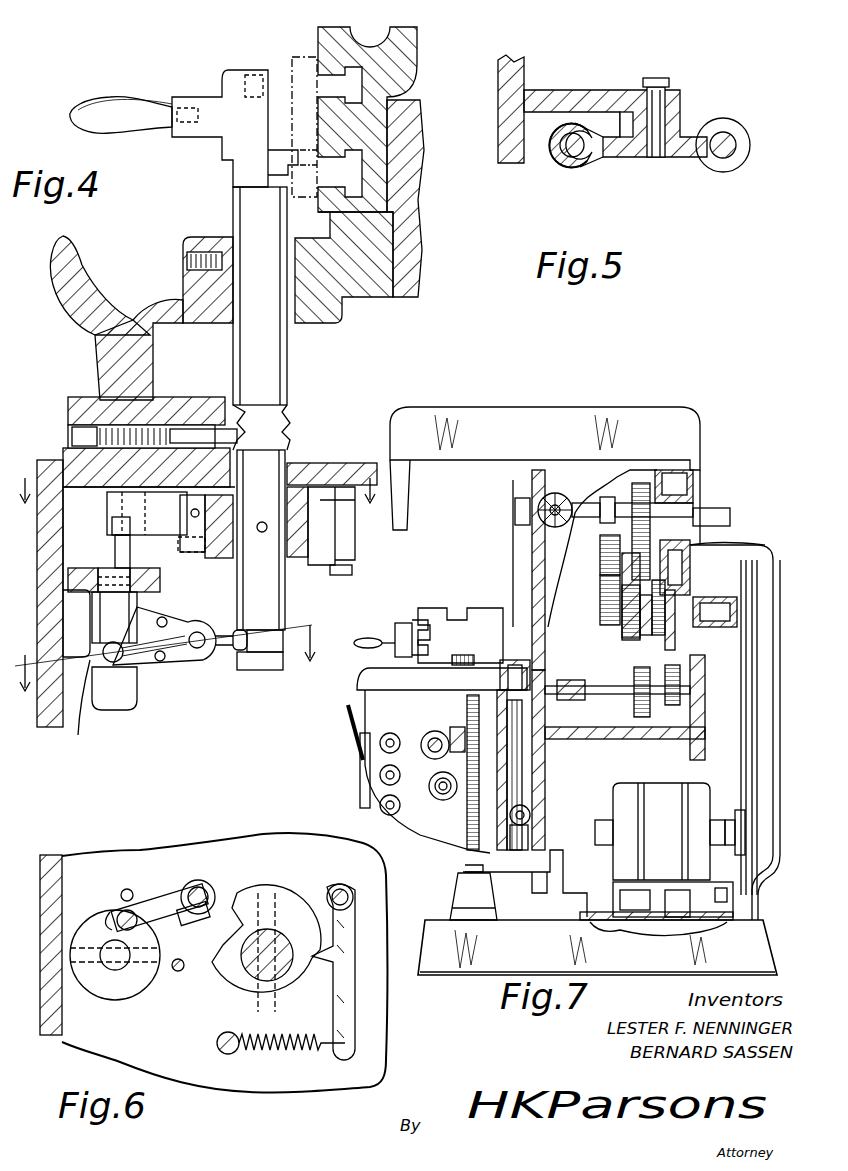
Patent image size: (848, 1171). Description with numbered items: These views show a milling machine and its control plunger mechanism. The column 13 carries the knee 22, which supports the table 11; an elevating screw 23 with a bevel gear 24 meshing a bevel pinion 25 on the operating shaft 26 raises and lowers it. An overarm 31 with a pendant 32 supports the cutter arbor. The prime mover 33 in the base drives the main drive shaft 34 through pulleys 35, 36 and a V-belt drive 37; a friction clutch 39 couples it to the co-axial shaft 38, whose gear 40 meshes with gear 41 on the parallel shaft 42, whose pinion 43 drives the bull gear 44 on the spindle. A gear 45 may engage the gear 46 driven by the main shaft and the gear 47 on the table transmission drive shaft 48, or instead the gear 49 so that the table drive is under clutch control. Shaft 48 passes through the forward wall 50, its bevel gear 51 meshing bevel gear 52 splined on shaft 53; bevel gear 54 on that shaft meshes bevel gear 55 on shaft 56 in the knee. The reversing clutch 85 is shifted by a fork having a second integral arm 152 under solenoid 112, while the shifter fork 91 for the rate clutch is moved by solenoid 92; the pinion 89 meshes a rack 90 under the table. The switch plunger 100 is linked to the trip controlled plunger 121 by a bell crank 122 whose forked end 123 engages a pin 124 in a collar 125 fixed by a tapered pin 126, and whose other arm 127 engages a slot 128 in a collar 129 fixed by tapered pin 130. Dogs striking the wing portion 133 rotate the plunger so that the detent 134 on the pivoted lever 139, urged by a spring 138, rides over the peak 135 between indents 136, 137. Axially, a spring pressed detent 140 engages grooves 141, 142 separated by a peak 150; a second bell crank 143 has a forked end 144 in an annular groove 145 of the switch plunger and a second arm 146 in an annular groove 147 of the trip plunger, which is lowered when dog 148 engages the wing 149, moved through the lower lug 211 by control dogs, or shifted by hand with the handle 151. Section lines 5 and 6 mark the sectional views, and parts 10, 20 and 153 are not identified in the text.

In FIG. 7, the hand wheel hub 10 is at (515, 512).
In FIG. 4, the table 11 is at (317, 32).
In FIG. 7, the table 11 is at (480, 608).
In FIG. 7, the column 13 is at (532, 560).
In FIG. 7, the hand wheel 20 is at (558, 490).
In FIG. 4, the knee 22 is at (82, 262).
In FIG. 7, the elevating screw 23 is at (467, 812).
In FIG. 7, the bevel gear 24 is at (474, 732).
In FIG. 7, the bevel pinion 25 is at (430, 733).
In FIG. 7, the operating shaft 26 is at (440, 712).
In FIG. 7, the overarm 31 is at (500, 408).
In FIG. 7, the pendant 32 is at (407, 493).
In FIG. 7, the prime mover 33 is at (625, 785).
In FIG. 7, the main drive shaft 34 is at (700, 597).
In FIG. 7, the pulley 35 is at (773, 630).
In FIG. 7, the pulley 36 is at (762, 825).
In FIG. 7, the V-belt drive 37 is at (760, 740).
In FIG. 7, the co-axial shaft 38 is at (606, 613).
In FIG. 7, the friction clutch 39 is at (655, 635).
In FIG. 7, the gear 40 is at (628, 630).
In FIG. 7, the gear 41 is at (600, 585).
In FIG. 7, the parallel shaft 42 is at (600, 565).
In FIG. 7, the pinion 43 is at (638, 595).
In FIG. 7, the bull gear 44 is at (641, 483).
In FIG. 7, the gear 45 is at (680, 653).
In FIG. 7, the gear 46 is at (705, 545).
In FIG. 7, the gear 47 is at (675, 715).
In FIG. 7, the table transmission drive shaft 48 is at (617, 705).
In FIG. 7, the gear 49 is at (665, 645).
In FIG. 7, the forward wall 50 is at (545, 755).
In FIG. 7, the bevel gear 51 is at (540, 672).
In FIG. 7, the bevel gear 52 is at (548, 705).
In FIG. 7, the spline shaft 53 is at (525, 785).
In FIG. 7, the bevel gear 54 is at (530, 830).
In FIG. 7, the bevel gear 55 is at (508, 845).
In FIG. 7, the shaft 56 is at (530, 812).
In FIG. 7, the direction determining clutch spool 85 is at (360, 752).
In FIG. 7, the pinion 89 is at (466, 655).
In FIG. 7, the rack 90 is at (448, 610).
In FIG. 7, the shifter fork 91 is at (405, 805).
In FIG. 7, the solenoid 92 is at (380, 805).
In FIG. 4, the switch plunger 100 is at (137, 685).
In FIG. 7, the solenoid 112 is at (358, 720).
In FIG. 4, the trip controlled plunger 121 is at (233, 75).
In FIG. 5, the trip controlled plunger 121 is at (720, 160).
In FIG. 6, the trip controlled plunger 121 is at (240, 973).
In FIG. 7, the trip controlled plunger 121 is at (400, 623).
In FIG. 4, the bell crank 122 is at (155, 545).
In FIG. 6, the bell crank 122 is at (158, 900).
In FIG. 6, the forked end 123 is at (125, 889).
In FIG. 4, the pin 124 is at (115, 548).
In FIG. 6, the pin 124 is at (117, 916).
In FIG. 4, the collar 125 is at (97, 580).
In FIG. 6, the collar 125 is at (128, 988).
In FIG. 6, the tapered pin 126 is at (92, 975).
In FIG. 6, the arm 127 is at (215, 892).
In FIG. 6, the slot 128 is at (210, 939).
In FIG. 4, the collar 129 is at (222, 560).
In FIG. 6, the collar 129 is at (280, 902).
In FIG. 6, the tapered pin 130 is at (262, 895).
In FIG. 4, the wing portion 133 is at (200, 97).
In FIG. 7, the wing portion 133 is at (394, 630).
In FIG. 4, the detent 134 is at (315, 560).
In FIG. 6, the detent 134 is at (322, 960).
In FIG. 6, the peak 135 is at (328, 914).
In FIG. 6, the indent 136 is at (312, 966).
In FIG. 6, the indent 137 is at (305, 907).
In FIG. 6, the spring 138 is at (283, 1056).
In FIG. 4, the pivoted lever 139 is at (345, 555).
In FIG. 6, the pivoted lever 139 is at (352, 1014).
In FIG. 4, the spring pressed detent 140 is at (190, 428).
In FIG. 4, the groove 141 is at (288, 440).
In FIG. 4, the groove 142 is at (288, 412).
In FIG. 4, the second bell crank 143 is at (210, 655).
In FIG. 5, the second bell crank 143 is at (672, 103).
In FIG. 4, the forked end 144 is at (104, 650).
In FIG. 5, the forked end 144 is at (568, 167).
In FIG. 4, the annular groove 145 is at (79, 702).
In FIG. 5, the annular groove 145 is at (560, 160).
In FIG. 4, the second arm 146 is at (228, 630).
In FIG. 5, the second arm 146 is at (695, 157).
In FIG. 4, the annular groove 147 is at (285, 620).
In FIG. 4, the dog 148 is at (308, 135).
In FIG. 4, the wing 149 is at (290, 152).
In FIG. 4, the peak 150 is at (290, 425).
In FIG. 4, the handle 151 is at (100, 105).
In FIG. 7, the second integral arm 152 is at (432, 779).
In FIG. 7, the knob 153 is at (380, 778).
In FIG. 4, the lower lug 211 is at (255, 75).
In FIG. 4, the section line 5— 5 is at (165, 664).
In FIG. 4, the section line 6— 6 is at (195, 501).